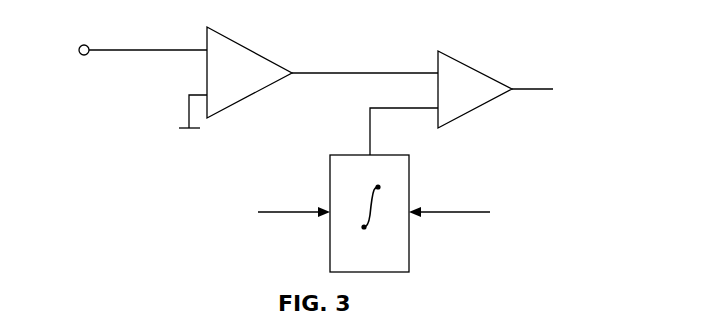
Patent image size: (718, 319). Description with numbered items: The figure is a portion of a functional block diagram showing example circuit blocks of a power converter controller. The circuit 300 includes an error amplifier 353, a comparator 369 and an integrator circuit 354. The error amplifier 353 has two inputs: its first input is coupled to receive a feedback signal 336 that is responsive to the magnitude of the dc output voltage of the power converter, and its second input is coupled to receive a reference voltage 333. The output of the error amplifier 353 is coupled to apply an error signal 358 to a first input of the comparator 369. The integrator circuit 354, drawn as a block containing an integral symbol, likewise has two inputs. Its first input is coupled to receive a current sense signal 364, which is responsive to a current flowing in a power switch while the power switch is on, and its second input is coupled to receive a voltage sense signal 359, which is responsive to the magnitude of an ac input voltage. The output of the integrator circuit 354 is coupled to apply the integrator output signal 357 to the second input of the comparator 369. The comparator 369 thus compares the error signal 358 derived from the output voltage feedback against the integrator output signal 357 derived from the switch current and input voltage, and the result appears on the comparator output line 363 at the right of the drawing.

The circuit 300 is at (695, 45).
The feedback signal 336 is at (84, 93).
The error amplifier 353 is at (256, 81).
The reference voltage 333 is at (200, 135).
The error signal 358 is at (304, 45).
The comparator 369 is at (479, 98).
The comparator output signal 363 is at (541, 86).
The integrator output signal 357 is at (373, 134).
The integrator circuit 354 is at (415, 258).
The voltage sense signal 359 is at (272, 206).
The current sense signal 364 is at (464, 206).